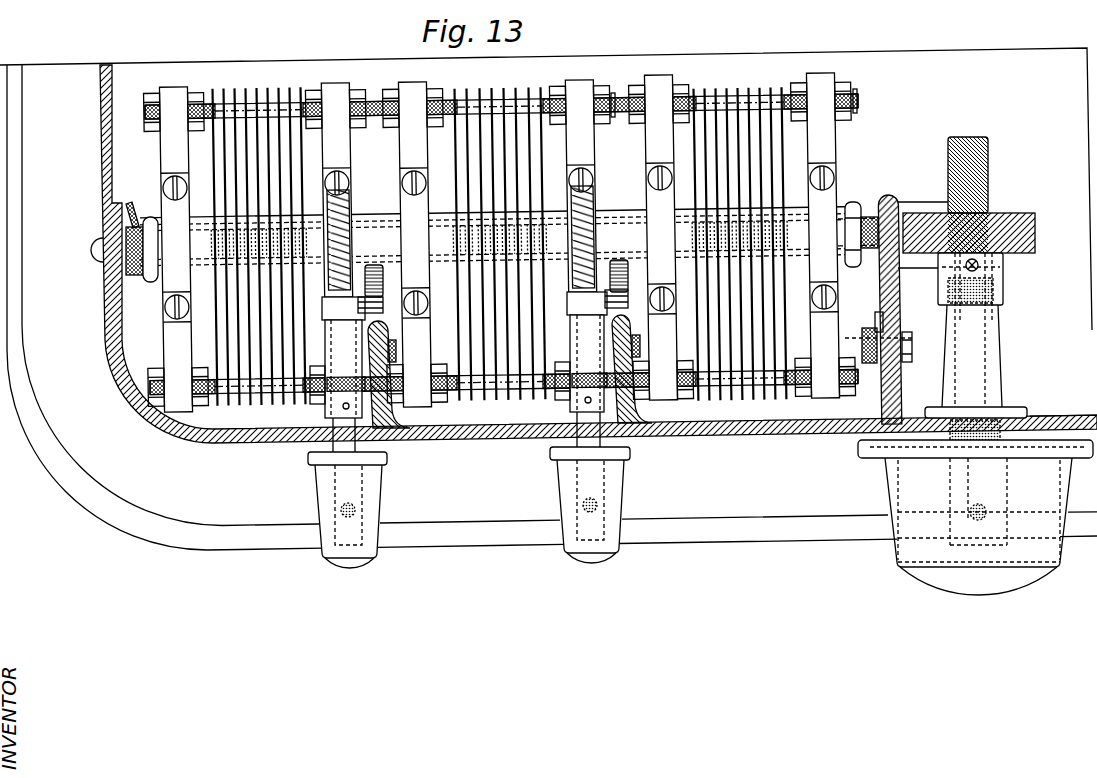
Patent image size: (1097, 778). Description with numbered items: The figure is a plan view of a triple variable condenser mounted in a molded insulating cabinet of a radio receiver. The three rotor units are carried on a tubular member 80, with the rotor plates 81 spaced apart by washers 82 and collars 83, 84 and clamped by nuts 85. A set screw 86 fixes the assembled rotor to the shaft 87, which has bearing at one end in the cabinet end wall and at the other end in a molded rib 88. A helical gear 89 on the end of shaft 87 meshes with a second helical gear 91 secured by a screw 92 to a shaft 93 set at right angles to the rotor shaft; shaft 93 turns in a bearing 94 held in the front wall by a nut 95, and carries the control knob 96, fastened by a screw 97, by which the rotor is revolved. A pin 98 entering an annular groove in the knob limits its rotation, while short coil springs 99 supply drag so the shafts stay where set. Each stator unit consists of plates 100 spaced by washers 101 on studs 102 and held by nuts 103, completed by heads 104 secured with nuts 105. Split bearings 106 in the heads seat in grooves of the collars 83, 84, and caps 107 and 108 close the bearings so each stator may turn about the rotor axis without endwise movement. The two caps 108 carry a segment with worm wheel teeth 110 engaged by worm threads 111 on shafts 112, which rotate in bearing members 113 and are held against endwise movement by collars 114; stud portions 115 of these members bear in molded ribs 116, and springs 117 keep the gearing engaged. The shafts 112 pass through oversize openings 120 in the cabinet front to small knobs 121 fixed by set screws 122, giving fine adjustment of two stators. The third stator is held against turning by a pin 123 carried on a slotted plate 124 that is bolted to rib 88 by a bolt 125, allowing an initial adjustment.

The tubular member 80 is at (643, 216).
The rotor plates 81 is at (522, 213).
The washers 82 is at (480, 213).
The collar 83 is at (314, 218).
The collar 84 is at (195, 280).
The nuts 85 is at (146, 285).
The set screw 86 is at (125, 243).
The shaft 87 is at (100, 258).
The rib 88 is at (890, 195).
The helical gear 89 is at (977, 140).
The helical gear 91 is at (1010, 215).
The screw 92 is at (980, 266).
The shaft 93 is at (1000, 352).
The bearing 94 is at (1003, 385).
The nut 95 is at (1060, 428).
The control knob 96 is at (1062, 500).
The screw 97 is at (985, 510).
The pin 98 is at (1000, 420).
The coil springs 99 is at (995, 290).
The plates 100 is at (508, 88).
The washers 101 is at (470, 88).
The studs 102 is at (600, 92).
The nuts 103 is at (435, 73).
The heads 104 is at (348, 72).
The nuts 105 is at (366, 92).
The split bearings 106 is at (165, 232).
The caps 107 is at (403, 182).
The caps 108 is at (352, 165).
The worm wheel teeth 110 is at (350, 196).
The worm threads 111 is at (330, 258).
The shafts 112 is at (335, 482).
The bearing members 113 is at (322, 400).
The collars 114 is at (340, 440).
The stud portions 115 is at (376, 342).
The ribs 116 is at (388, 380).
The springs 117 is at (367, 262).
The openings 120 is at (308, 460).
The knobs 121 is at (322, 540).
The set screws 122 is at (352, 514).
The pin 123 is at (862, 328).
The plate 124 is at (884, 318).
The bolt 125 is at (912, 342).